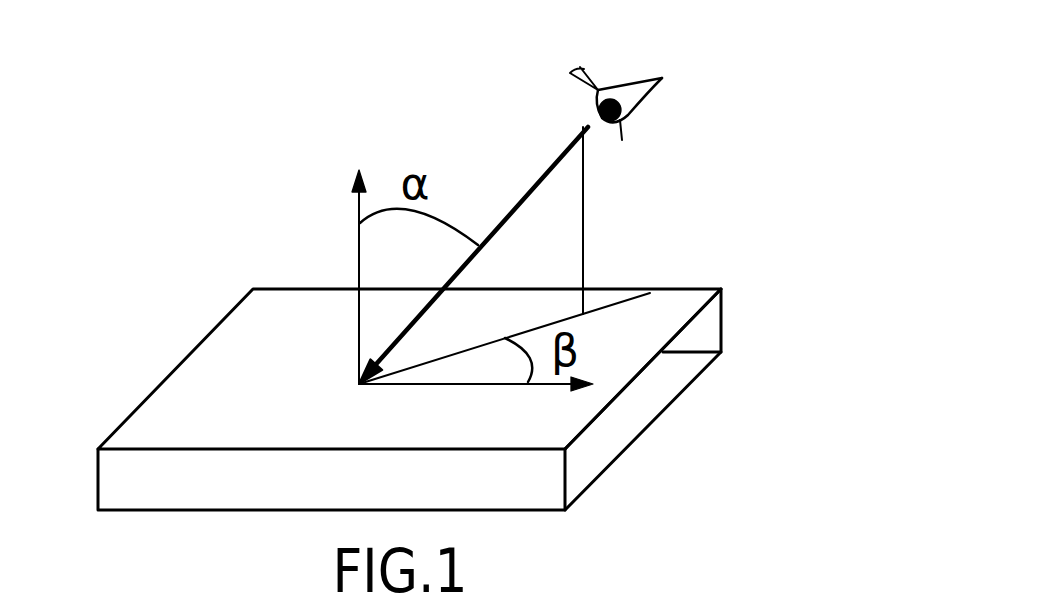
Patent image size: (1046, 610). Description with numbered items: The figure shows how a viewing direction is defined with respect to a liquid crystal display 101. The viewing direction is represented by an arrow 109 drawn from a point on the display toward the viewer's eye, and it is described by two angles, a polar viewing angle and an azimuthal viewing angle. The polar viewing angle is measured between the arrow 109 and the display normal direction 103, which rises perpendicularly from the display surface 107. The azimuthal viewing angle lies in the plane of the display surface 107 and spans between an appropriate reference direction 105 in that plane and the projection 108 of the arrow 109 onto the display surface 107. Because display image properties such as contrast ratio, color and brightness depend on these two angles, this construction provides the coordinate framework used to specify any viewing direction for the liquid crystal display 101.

The liquid crystal display 101 is at (747, 335).
The display normal direction 103 is at (358, 253).
The reference direction 105 is at (443, 385).
The display surface 107 is at (688, 308).
The projection 108 is at (615, 308).
The arrow 109 is at (545, 174).